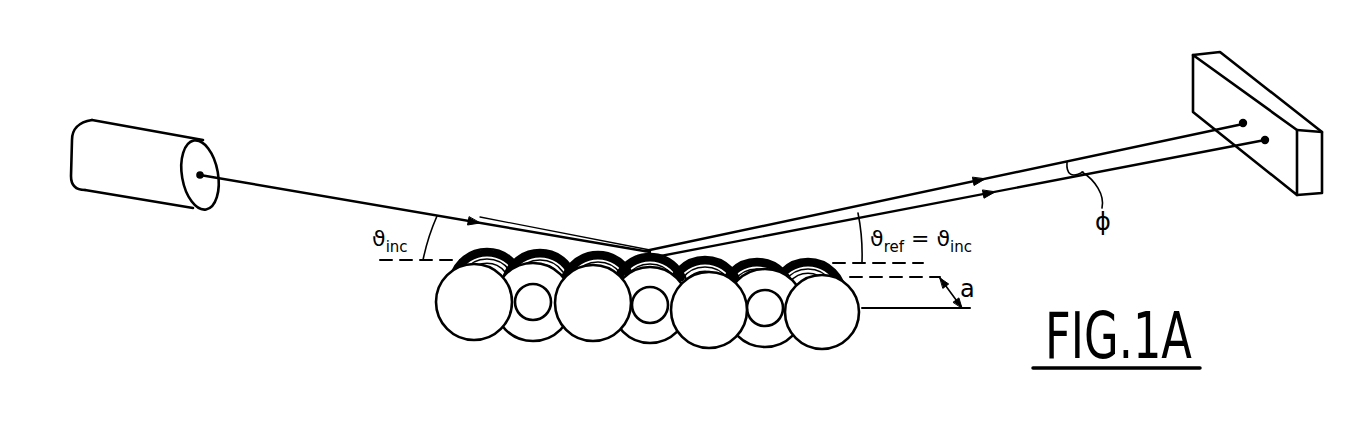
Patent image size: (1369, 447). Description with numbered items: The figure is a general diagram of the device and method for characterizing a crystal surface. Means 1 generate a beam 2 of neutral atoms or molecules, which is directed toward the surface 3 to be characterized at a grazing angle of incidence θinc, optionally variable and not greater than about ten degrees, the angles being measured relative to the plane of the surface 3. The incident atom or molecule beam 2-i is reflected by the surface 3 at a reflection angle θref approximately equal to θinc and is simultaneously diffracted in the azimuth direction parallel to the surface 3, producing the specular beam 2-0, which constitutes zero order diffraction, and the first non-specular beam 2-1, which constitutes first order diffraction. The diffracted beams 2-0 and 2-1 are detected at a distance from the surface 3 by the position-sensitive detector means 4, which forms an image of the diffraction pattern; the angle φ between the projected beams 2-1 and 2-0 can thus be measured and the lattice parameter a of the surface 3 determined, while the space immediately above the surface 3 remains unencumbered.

The means for generating a beam 1 is at (155, 130).
The beam of neutral atoms or molecules 2 is at (734, 190).
The incident atom or molecule beam 2-i is at (293, 185).
The first non-specular beam 2-1 is at (1147, 140).
The specular beam 2-0 is at (1168, 158).
The surface 3 is at (712, 348).
The position-sensitive detector means 4 is at (1247, 72).